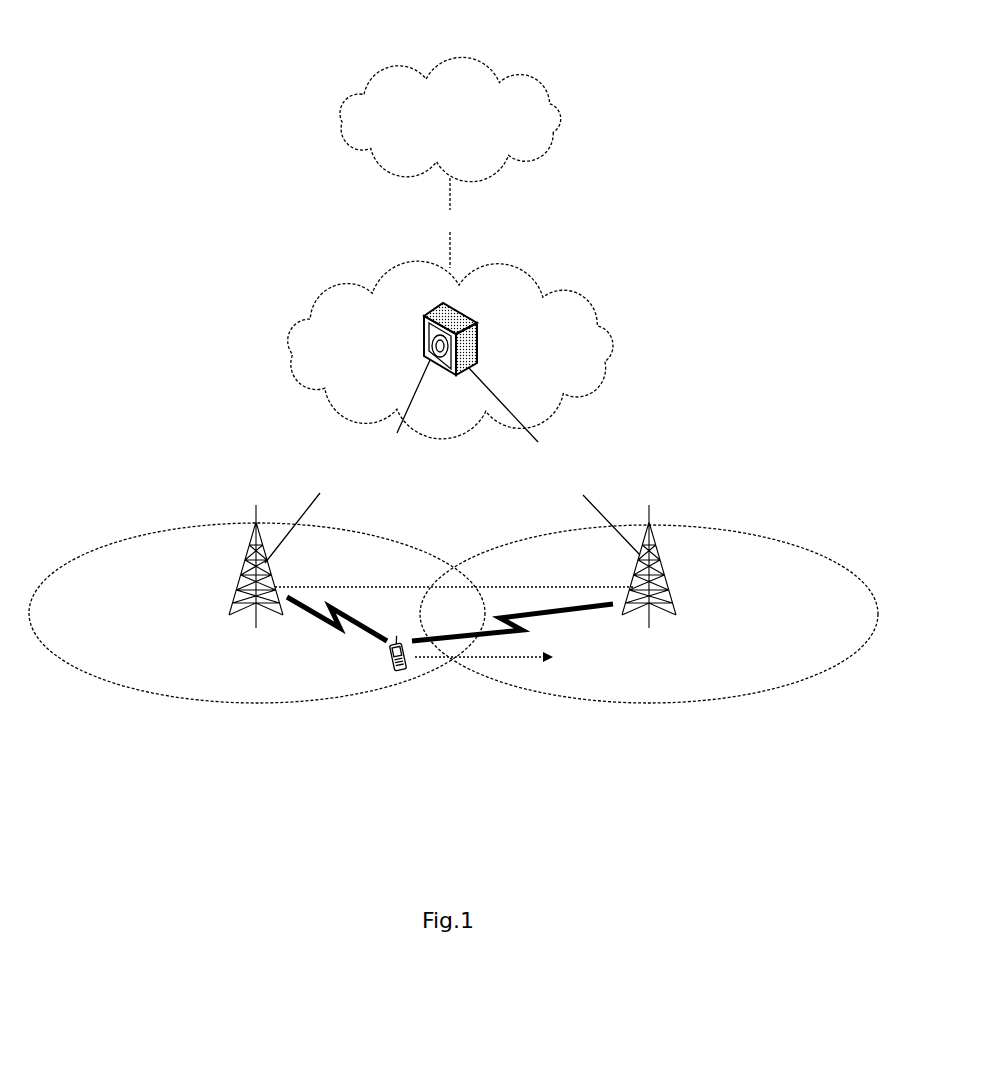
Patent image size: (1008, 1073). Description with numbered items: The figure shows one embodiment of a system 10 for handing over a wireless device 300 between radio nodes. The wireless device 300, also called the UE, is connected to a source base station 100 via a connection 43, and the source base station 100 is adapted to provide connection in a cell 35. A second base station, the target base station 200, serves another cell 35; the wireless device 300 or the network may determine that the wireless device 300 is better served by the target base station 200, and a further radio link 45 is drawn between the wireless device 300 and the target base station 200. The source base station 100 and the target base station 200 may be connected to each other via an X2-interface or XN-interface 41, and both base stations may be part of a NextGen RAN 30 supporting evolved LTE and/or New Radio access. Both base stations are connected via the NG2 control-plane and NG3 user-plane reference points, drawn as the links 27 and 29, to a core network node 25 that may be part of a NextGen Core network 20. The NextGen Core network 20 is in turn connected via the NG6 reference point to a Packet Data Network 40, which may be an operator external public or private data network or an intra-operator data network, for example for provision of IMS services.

The system 10 is at (724, 152).
The NextGen Core network 20 is at (335, 282).
The core network node 25 is at (479, 338).
The NG2/NG3 interface 27 is at (347, 461).
The NG2/NG3 interface 29 is at (554, 461).
The NextGen RAN 30 is at (713, 427).
The cell 35 is at (108, 545).
The Packet Data Network 40 is at (370, 70).
The X2-interface or XN-interface 41 is at (373, 587).
The connection 43 is at (333, 630).
The radio link to second base station 45 is at (552, 615).
The source base station 100 is at (237, 590).
The target base station 200 is at (673, 590).
The wireless device 300 is at (395, 671).